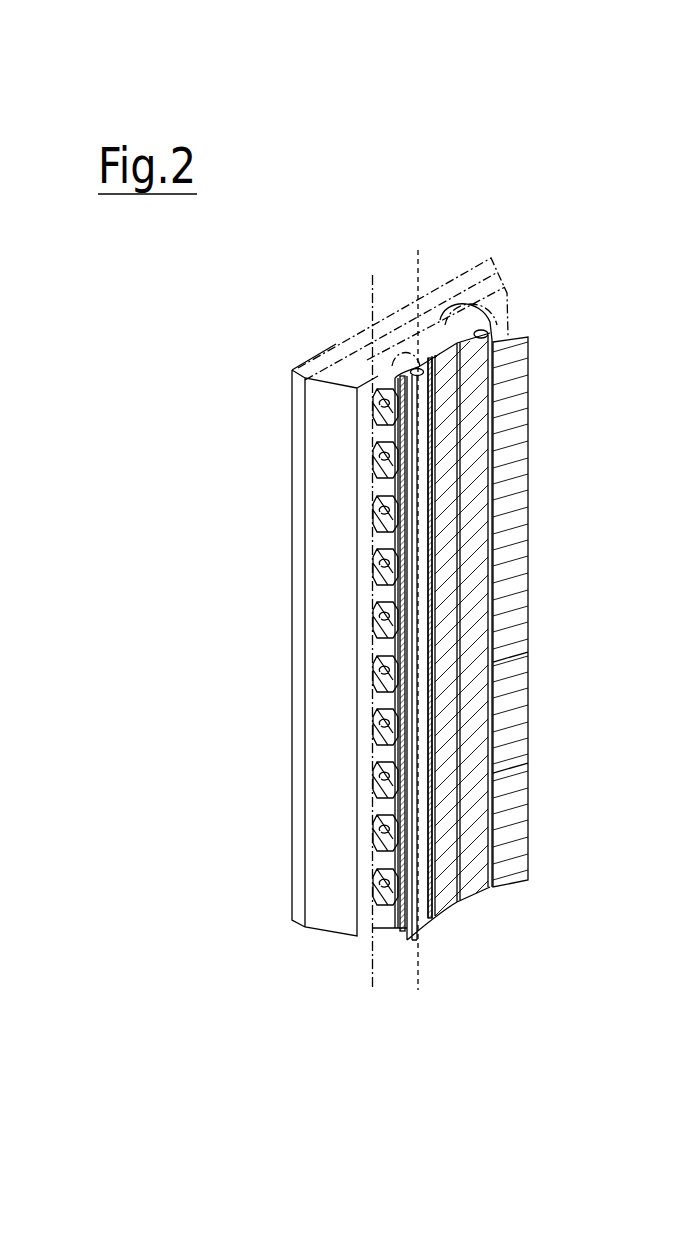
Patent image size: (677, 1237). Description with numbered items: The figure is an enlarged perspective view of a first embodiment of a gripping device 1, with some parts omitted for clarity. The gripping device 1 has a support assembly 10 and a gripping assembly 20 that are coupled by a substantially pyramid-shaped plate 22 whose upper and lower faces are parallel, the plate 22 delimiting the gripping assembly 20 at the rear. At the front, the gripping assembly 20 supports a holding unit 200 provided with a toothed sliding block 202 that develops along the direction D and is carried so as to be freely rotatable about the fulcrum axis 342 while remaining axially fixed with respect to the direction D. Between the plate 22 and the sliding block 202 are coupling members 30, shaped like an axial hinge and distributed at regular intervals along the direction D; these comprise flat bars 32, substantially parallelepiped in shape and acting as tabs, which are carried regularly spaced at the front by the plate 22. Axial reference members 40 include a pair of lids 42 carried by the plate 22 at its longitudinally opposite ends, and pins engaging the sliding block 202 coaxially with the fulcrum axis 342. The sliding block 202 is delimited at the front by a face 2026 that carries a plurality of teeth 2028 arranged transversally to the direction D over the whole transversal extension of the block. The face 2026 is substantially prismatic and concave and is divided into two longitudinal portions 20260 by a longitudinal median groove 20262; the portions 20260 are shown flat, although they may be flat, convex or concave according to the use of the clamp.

The gripping device 1 is at (292, 238).
The support assembly 10 is at (317, 347).
The plate 22 is at (327, 437).
The axial reference members 40 is at (492, 260).
The direction D is at (372, 288).
The fulcrum axis 342 is at (418, 270).
The lids 42 is at (405, 357).
The coupling members 30 is at (380, 943).
The flat bars 32 is at (373, 685).
The gripping assembly 20 is at (520, 303).
The holding unit 200 is at (503, 325).
The toothed sliding block 202 is at (490, 462).
The face 2026 is at (517, 607).
The teeth 2028 is at (527, 540).
The longitudinal portions 20260 is at (477, 690).
The longitudinal median groove 20262 is at (495, 770).